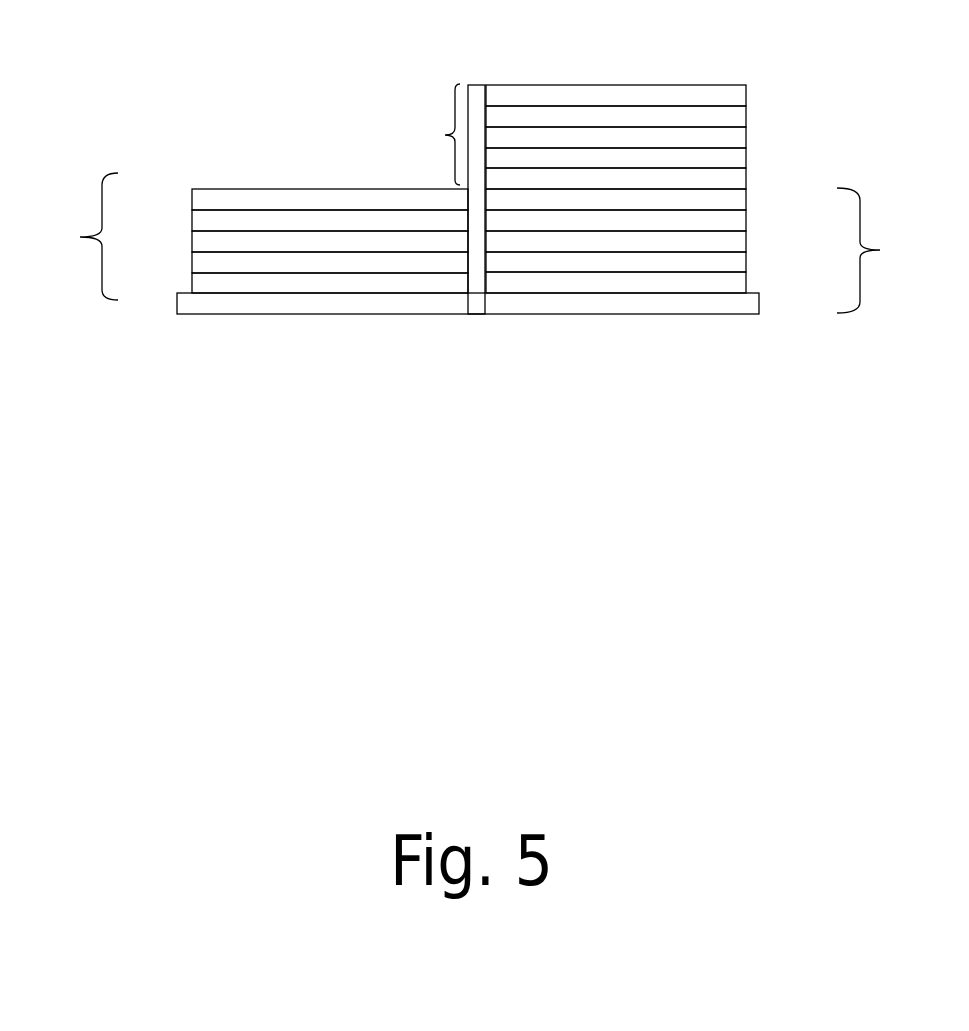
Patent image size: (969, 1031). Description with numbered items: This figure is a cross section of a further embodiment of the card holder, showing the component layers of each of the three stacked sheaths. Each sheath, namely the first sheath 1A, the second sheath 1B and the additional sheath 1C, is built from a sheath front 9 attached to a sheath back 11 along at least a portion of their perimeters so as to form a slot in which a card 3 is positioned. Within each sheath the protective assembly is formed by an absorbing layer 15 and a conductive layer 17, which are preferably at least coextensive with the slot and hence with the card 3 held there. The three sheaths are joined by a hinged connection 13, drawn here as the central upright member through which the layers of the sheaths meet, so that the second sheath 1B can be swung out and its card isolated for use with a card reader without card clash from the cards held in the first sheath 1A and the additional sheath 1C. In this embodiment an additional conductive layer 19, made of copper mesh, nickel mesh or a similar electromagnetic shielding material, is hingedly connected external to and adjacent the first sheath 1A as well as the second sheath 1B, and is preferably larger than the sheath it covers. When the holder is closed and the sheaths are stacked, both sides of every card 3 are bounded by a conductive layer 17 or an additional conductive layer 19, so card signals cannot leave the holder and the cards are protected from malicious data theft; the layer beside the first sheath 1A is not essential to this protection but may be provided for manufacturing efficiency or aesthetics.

The first sheath 1A is at (882, 250).
The second sheath 1B is at (78, 236).
The additional sheath 1C is at (430, 134).
The card 3 is at (746, 116).
The sheath front 9 is at (746, 93).
The sheath back 11 is at (746, 179).
The hinged connection 13 is at (477, 95).
The absorbing layer 15 is at (746, 137).
The conductive layer 17 is at (746, 158).
The additional conductive layer 19 is at (760, 308).